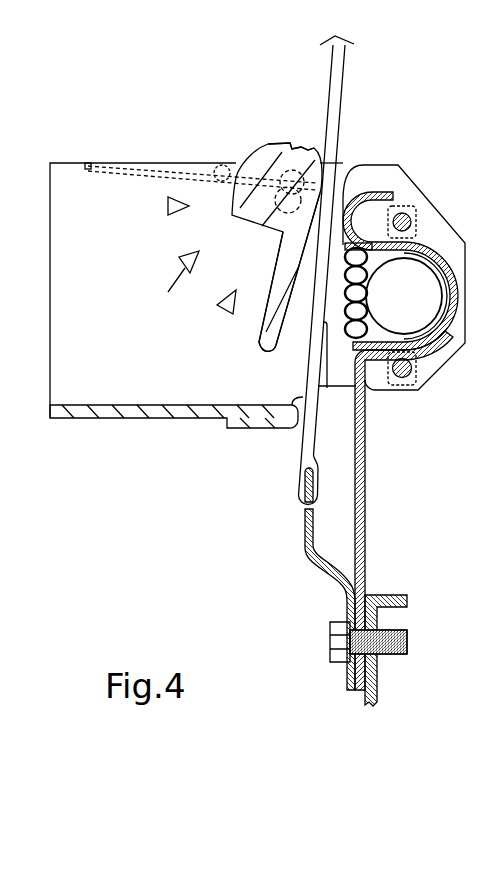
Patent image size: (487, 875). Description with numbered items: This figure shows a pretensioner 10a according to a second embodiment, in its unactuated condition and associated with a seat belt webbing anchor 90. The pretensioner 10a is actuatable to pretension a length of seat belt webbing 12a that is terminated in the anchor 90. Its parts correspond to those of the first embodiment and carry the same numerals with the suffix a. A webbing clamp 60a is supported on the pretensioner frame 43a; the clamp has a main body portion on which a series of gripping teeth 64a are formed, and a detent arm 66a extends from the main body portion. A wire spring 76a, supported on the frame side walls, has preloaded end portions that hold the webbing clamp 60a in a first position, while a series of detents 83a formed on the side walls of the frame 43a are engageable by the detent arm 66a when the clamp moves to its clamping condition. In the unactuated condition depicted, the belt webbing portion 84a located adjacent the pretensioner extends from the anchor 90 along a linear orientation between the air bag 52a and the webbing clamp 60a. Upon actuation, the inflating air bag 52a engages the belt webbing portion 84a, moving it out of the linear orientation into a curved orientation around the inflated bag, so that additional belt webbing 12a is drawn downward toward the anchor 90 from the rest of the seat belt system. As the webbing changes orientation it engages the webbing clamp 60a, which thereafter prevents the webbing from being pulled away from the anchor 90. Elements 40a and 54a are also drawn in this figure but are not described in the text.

The pretensioner 10a is at (168, 500).
The seat belt webbing 12a is at (340, 90).
The mounting bracket 40a is at (365, 490).
The pretensioner frame 43a is at (115, 427).
The air bag 52a is at (370, 165).
The pivot opening 54a is at (418, 278).
The webbing clamp 60a is at (240, 143).
The gripping teeth 64a is at (296, 147).
The detent arm 66a is at (266, 292).
The wire spring 76a is at (146, 175).
The detents 83a is at (217, 305).
The belt webbing portion 84a is at (312, 343).
The seat belt webbing anchor 90 is at (320, 581).